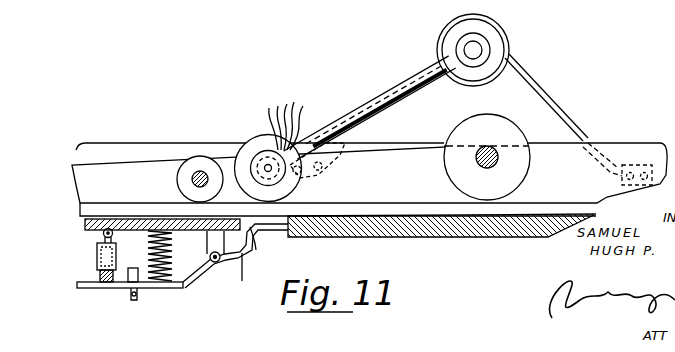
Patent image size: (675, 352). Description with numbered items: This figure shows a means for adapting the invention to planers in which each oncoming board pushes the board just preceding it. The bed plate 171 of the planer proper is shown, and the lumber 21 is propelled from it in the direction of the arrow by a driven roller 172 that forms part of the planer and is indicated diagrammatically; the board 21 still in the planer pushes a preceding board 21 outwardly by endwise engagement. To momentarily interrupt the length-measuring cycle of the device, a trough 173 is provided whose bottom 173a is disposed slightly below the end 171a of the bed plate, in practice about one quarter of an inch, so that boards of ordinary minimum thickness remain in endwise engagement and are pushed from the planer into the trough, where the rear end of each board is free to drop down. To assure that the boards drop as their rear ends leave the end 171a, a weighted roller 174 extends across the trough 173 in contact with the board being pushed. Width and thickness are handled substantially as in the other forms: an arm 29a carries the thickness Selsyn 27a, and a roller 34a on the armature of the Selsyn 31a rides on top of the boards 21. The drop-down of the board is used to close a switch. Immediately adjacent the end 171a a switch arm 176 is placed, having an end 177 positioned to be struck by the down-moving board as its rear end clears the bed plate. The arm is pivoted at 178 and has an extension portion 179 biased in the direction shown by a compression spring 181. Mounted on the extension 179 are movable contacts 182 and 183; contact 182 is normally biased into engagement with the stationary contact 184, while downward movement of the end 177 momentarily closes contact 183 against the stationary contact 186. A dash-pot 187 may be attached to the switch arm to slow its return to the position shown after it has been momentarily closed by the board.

The trough 173 is at (127, 113).
The weighted roller 174 is at (199, 156).
The Selsyn 31a is at (256, 128).
The arm 29a is at (395, 80).
The Selsyn 27a is at (490, 32).
The driven roller 172 is at (530, 168).
The roller 34a is at (300, 181).
The lumber 21 is at (147, 195).
The bed plate 171 is at (430, 232).
The end of the bed plate 171a is at (280, 236).
The bottom of the trough 173a is at (92, 224).
The end of the switch arm 177 is at (265, 248).
The switch arm 176 is at (241, 278).
The pivot 178 is at (209, 259).
The extension portion 179 is at (150, 286).
The compression spring 181 is at (168, 261).
The movable contact 183 is at (139, 276).
The movable contact 182 is at (133, 289).
The stationary contact 184 is at (132, 300).
The stationary contact 186 is at (126, 271).
The dash-pot 187 is at (97, 259).